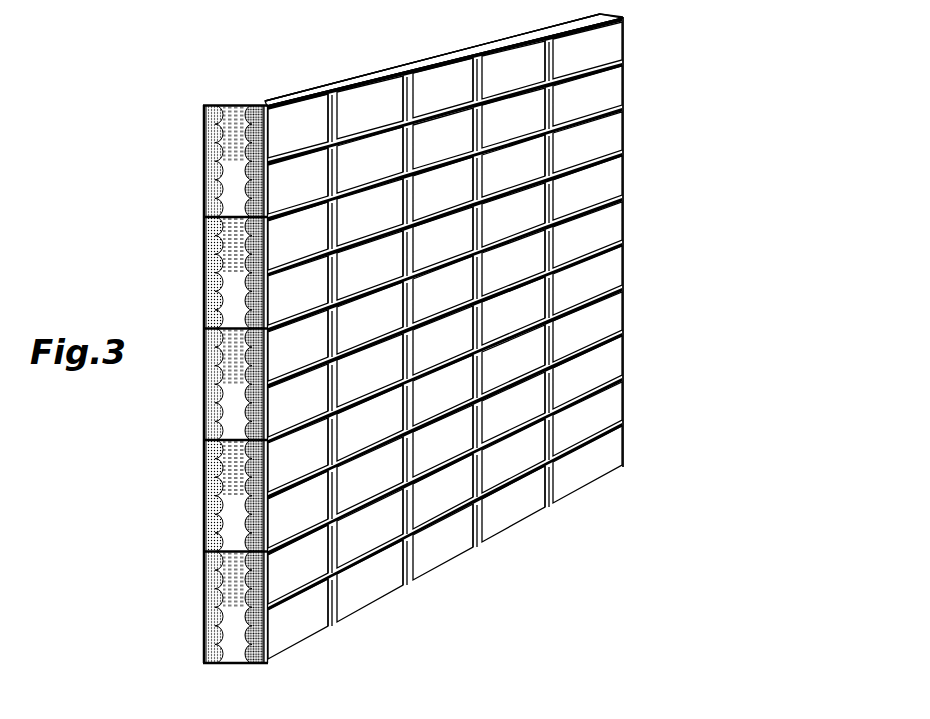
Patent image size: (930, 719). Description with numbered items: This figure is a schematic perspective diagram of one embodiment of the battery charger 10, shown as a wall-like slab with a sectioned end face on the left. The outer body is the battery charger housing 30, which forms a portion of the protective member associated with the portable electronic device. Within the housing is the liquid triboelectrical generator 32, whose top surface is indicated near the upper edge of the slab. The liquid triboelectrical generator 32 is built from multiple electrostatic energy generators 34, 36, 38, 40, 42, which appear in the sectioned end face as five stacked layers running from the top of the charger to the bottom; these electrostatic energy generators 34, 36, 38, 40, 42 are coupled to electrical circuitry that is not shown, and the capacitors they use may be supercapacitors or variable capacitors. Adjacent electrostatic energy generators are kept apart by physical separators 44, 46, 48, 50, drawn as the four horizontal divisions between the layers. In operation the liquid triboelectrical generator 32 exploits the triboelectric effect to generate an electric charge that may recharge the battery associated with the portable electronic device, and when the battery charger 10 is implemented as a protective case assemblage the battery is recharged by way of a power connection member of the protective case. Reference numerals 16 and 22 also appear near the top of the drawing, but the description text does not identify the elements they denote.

The battery charger 10 is at (177, 108).
The brick veneer 16 is at (364, 50).
The top plate 22 is at (670, 233).
The battery charger housing 30 is at (598, 15).
The liquid triboelectrical generator 32 is at (285, 82).
The electrostatic energy generator 34 is at (205, 161).
The electrostatic energy generator 36 is at (205, 273).
The electrostatic energy generator 38 is at (205, 384).
The electrostatic energy generator 40 is at (205, 496).
The electrostatic energy generator 42 is at (205, 608).
The physical separator 44 is at (204, 217).
The physical separator 46 is at (204, 328).
The physical separator 48 is at (204, 440).
The physical separator 50 is at (204, 552).